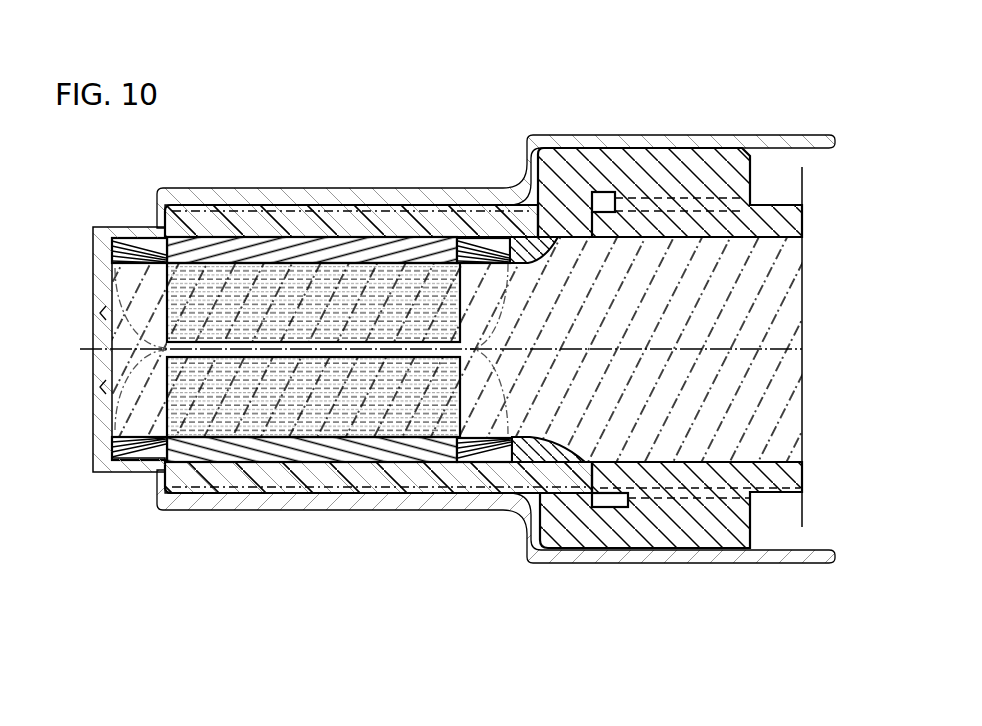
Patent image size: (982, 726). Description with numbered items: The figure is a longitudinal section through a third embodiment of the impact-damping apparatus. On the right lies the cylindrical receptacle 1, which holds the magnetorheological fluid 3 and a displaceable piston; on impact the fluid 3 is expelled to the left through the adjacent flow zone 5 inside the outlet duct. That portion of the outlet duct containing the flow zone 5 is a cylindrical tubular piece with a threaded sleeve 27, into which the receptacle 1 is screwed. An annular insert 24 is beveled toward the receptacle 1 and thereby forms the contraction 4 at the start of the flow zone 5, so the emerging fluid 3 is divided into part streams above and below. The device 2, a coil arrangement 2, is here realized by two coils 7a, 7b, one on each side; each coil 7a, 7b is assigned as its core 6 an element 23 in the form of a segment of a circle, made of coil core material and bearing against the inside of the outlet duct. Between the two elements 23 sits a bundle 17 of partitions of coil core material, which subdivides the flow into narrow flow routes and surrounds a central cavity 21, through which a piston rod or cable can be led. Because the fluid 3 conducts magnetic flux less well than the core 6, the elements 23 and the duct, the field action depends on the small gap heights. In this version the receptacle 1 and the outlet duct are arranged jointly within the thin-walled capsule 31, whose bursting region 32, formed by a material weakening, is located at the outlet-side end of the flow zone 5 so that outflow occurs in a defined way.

The receptacle 1 is at (703, 220).
The coil arrangement 2 is at (203, 332).
The magnetorheological fluid 3 is at (733, 402).
The contraction 4 is at (558, 302).
The flow zone 5 is at (292, 222).
The core 6 is at (180, 468).
The first coil 7a is at (118, 240).
The second coil 7b is at (128, 455).
The bundle 17 is at (372, 277).
The central cavity 21 is at (268, 352).
The element in the form of a segment of a circle 23 is at (210, 247).
The insert 24 is at (547, 243).
The threaded sleeve 27 is at (738, 535).
The capsule 31 is at (752, 142).
The bursting region 32 is at (103, 328).